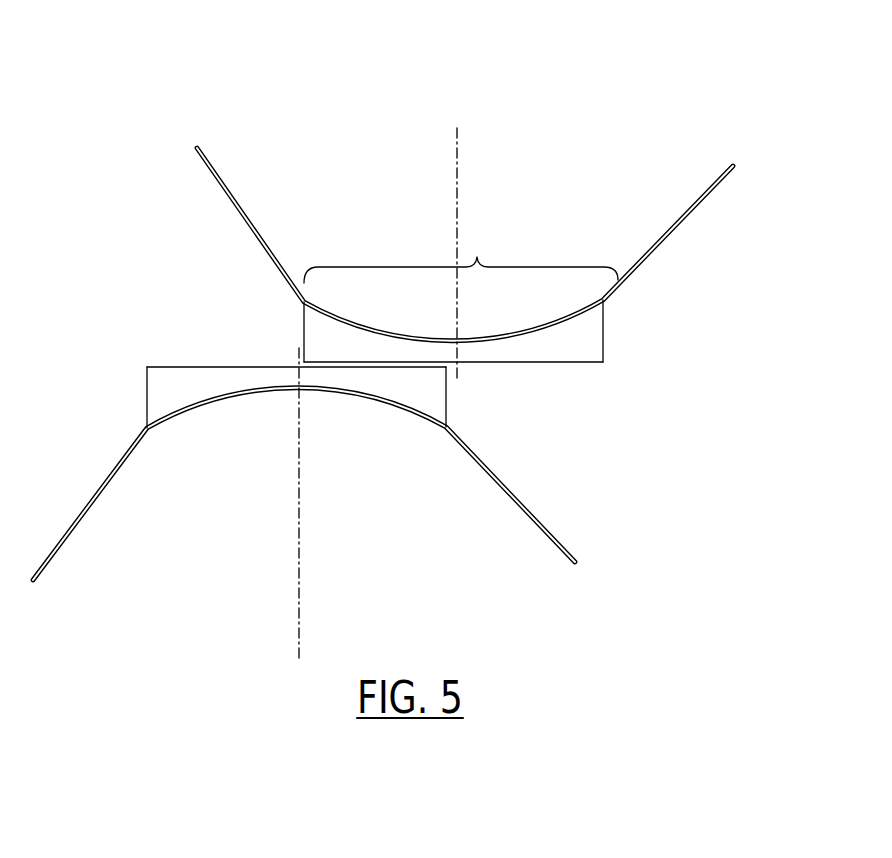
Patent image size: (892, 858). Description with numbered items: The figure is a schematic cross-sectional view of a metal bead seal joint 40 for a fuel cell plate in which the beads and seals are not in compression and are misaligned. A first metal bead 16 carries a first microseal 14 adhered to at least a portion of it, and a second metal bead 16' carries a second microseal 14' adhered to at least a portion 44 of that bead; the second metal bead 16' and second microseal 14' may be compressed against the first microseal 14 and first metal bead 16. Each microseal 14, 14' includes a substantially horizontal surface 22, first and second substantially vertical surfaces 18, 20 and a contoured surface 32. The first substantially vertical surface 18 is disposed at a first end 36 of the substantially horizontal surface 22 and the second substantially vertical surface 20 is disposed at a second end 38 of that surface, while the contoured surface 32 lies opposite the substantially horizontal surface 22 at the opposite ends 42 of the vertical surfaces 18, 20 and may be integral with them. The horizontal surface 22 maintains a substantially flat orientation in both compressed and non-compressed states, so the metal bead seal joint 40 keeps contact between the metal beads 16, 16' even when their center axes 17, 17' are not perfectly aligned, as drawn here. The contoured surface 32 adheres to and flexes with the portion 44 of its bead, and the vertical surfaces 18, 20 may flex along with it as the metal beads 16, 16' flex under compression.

The metal bead seal joint 40 is at (750, 93).
The first microseal 14 is at (340, 406).
The second microseal 14' is at (488, 393).
The first metal bead 16 is at (304, 484).
The second metal bead 16' is at (465, 244).
The center axis 17 is at (329, 503).
The center axis 17' is at (490, 253).
The first substantially vertical surface 18 is at (147, 398).
The second substantially vertical surface 20 is at (302, 336).
The substantially horizontal surface 22 is at (190, 366).
The contoured surface 32 is at (372, 323).
The first end 36 is at (158, 366).
The second end 38 is at (410, 360).
The opposite ends 42 is at (302, 310).
The portion of metal bead 44 is at (461, 252).